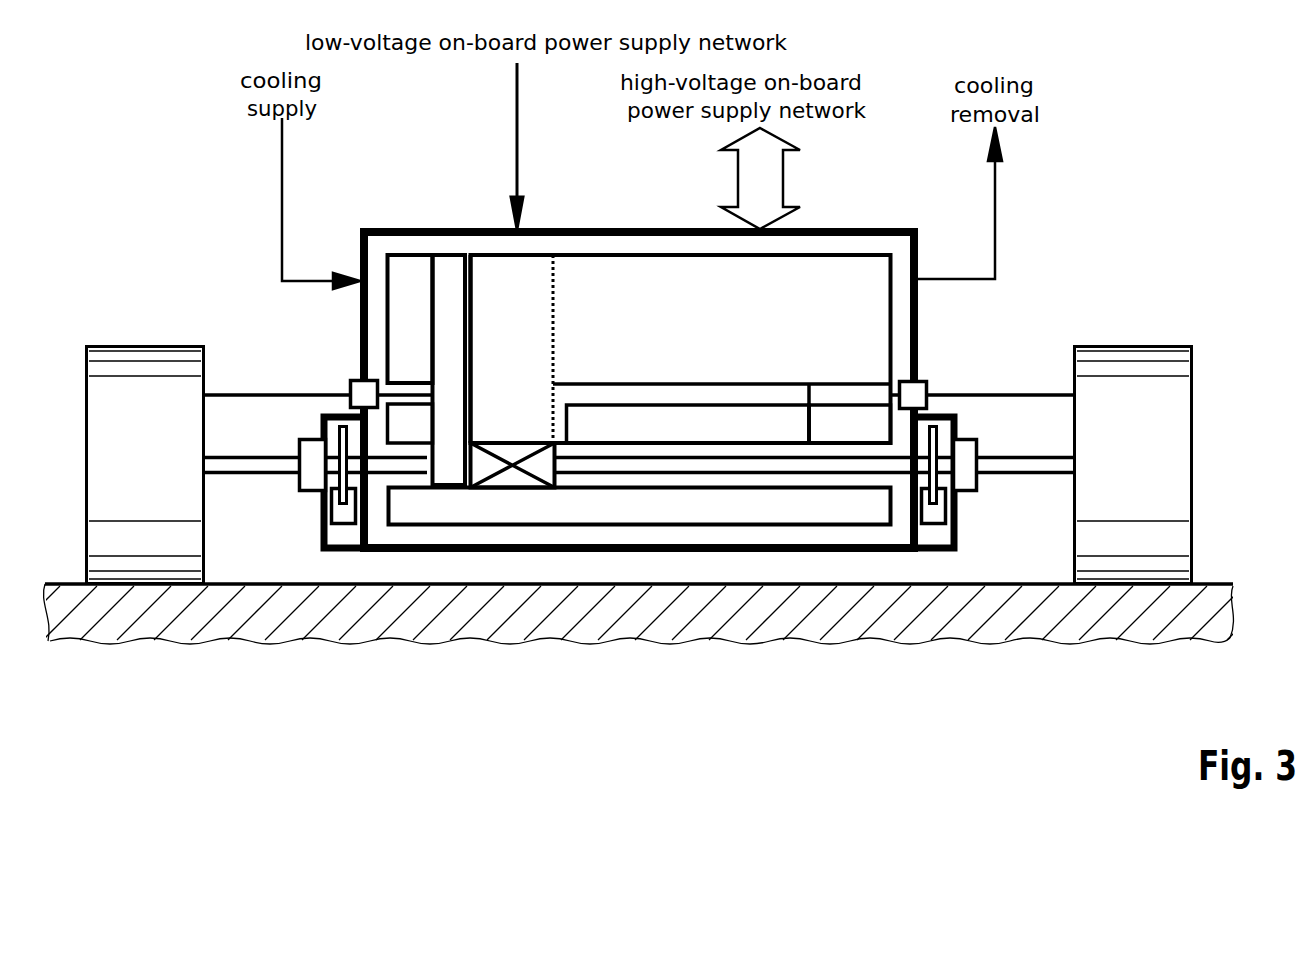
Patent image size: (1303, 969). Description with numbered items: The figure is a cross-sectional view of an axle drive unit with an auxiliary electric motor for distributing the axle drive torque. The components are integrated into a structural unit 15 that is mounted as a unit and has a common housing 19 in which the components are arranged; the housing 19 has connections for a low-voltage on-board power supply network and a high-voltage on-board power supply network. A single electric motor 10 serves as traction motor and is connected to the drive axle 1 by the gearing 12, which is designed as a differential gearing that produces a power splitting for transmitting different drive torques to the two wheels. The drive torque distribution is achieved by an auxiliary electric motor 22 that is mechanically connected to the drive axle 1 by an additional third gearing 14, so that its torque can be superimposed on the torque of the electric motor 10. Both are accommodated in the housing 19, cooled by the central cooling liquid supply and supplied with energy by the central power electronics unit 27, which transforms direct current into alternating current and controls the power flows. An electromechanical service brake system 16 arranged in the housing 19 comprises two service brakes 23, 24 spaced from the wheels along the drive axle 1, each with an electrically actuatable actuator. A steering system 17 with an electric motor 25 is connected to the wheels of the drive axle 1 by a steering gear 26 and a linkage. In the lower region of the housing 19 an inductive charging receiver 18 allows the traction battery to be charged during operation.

The drive axle 1 is at (249, 458).
The electric motor 10 is at (641, 272).
The gearing 12 is at (541, 272).
The third gearing 14 is at (450, 272).
The structural unit 15 is at (616, 566).
The electromechanical service brake system 16 is at (320, 538).
The steering system 17 is at (900, 372).
The inductive charging receiver 18 is at (507, 510).
The housing 19 is at (918, 250).
The auxiliary electric motor 22 is at (410, 272).
The service brake 23 is at (338, 510).
The service brake 24 is at (940, 510).
The electric motor 25 is at (862, 420).
The steering gear 26 is at (828, 394).
The power electronics unit 27 is at (630, 427).